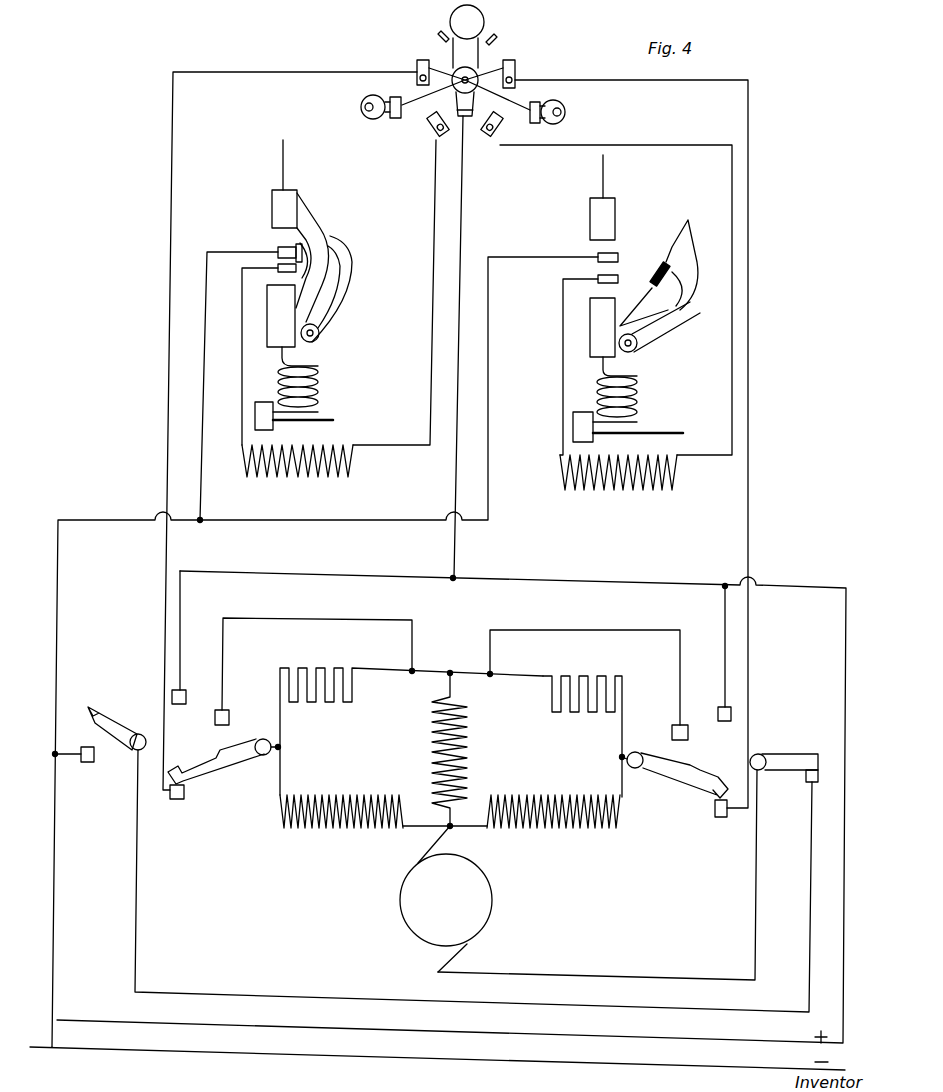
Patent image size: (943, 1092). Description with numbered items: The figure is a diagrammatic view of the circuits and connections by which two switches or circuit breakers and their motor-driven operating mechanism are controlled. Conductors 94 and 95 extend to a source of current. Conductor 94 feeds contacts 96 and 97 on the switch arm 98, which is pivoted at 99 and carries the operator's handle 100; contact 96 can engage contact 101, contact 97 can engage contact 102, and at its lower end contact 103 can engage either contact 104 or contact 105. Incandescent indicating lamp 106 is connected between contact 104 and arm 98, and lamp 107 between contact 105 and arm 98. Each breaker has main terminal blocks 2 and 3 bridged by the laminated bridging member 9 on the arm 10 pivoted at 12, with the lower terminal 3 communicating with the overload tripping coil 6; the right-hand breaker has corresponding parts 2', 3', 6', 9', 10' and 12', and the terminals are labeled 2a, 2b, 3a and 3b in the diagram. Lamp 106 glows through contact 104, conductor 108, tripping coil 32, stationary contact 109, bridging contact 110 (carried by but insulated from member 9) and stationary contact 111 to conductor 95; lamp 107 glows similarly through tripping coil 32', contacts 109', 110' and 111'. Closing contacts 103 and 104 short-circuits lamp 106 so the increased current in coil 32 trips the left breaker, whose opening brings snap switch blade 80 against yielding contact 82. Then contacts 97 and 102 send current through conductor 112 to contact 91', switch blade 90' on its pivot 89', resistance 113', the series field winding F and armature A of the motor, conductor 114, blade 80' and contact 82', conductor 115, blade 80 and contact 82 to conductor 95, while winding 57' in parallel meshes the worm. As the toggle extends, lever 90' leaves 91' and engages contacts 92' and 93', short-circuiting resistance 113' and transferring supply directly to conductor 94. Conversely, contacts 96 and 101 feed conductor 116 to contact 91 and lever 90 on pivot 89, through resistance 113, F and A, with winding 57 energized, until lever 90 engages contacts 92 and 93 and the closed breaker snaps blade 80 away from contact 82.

The operator's handle 100 is at (484, 18).
The contact 96 is at (447, 35).
The contact 97 is at (498, 38).
The switch arm 98 is at (472, 52).
The pivot 99 is at (463, 80).
The contact 101 is at (416, 62).
The contact 102 is at (517, 62).
The contact 103 is at (470, 118).
The contact 104 is at (430, 112).
The contact 105 is at (505, 126).
The incandescent indicating lamp 106 is at (360, 105).
The incandescent indicating lamp 107 is at (567, 112).
The lever shaft 2a is at (288, 165).
The main terminal block 2 is at (269, 209).
The laminated bridging member 9 is at (318, 257).
The arm 10 is at (346, 289).
The pivot 12 is at (327, 342).
The bridging contact 110 is at (247, 375).
The stationary contact 111 is at (279, 244).
The stationary contact 109 is at (235, 354).
The main terminal block 3 is at (269, 316).
The overload tripping coil 6 is at (310, 377).
The bracket 3a is at (335, 426).
The tripping coil 32 is at (297, 479).
The conductor 108 is at (428, 328).
The conductor 116 is at (171, 326).
The lever shaft 2b is at (605, 165).
The relay core 2' is at (588, 219).
The contact 111' is at (634, 227).
The contact 109' is at (615, 341).
The bridging contact 110' is at (646, 274).
The armature arm 9' is at (671, 273).
The armature arm 10' is at (667, 327).
The pivot 12' is at (645, 354).
The relay coil 3' is at (589, 327).
The spring 6' is at (634, 387).
The bracket 3b is at (652, 434).
The tripping coil 32' is at (619, 487).
The conductor 112 is at (748, 347).
The conductor 94 is at (465, 234).
The conductor 95 is at (207, 360).
The contact 92 is at (192, 637).
The contact 93 is at (313, 672).
The contact 92' is at (708, 653).
The contact 93' is at (589, 685).
The resistance 113 is at (410, 720).
The resistance 113' is at (587, 722).
The electromagnet winding 57 is at (341, 821).
The winding 57' is at (553, 825).
The series field winding F is at (457, 747).
The armature A is at (493, 902).
The conductor 114 is at (630, 978).
The snap switch blade 80 is at (117, 726).
The yielding contact 82 is at (78, 770).
The contact 91 is at (183, 805).
The movable contact lever 90 is at (216, 770).
The pivot 89 is at (266, 772).
The switch blade 80' is at (784, 748).
The contact 82' is at (792, 788).
The contact 91' is at (723, 827).
The switch blade 90' is at (684, 793).
The pivot 89' is at (641, 782).
The conductor 115 is at (136, 895).